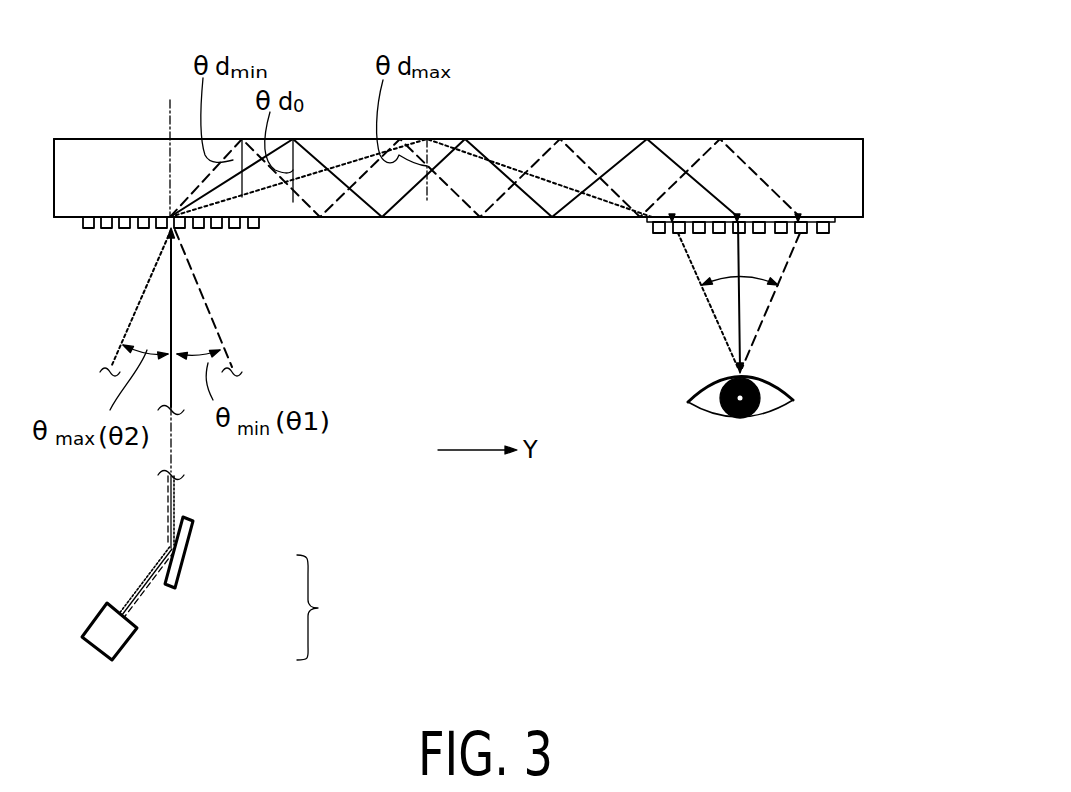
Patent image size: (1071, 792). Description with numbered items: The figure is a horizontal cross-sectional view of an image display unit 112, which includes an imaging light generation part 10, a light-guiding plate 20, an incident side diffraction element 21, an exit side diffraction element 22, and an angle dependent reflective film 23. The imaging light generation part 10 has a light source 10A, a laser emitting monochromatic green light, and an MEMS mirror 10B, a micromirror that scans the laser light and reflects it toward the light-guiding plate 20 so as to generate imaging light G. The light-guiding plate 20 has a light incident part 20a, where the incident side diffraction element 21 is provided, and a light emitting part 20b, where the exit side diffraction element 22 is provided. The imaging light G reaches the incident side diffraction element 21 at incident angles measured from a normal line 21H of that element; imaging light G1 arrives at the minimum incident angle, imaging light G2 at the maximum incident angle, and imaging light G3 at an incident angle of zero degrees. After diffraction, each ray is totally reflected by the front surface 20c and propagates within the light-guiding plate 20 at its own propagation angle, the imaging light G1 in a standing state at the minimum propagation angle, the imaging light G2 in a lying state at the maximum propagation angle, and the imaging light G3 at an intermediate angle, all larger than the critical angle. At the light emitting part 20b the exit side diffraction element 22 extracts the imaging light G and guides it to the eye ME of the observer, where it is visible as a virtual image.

The image display unit 112 is at (796, 55).
The light-guiding plate 20 is at (497, 173).
The light incident part 20a is at (232, 251).
The light emitting part 20b is at (776, 265).
The front surface 20c is at (535, 138).
The incident side diffraction element 21 is at (108, 226).
The normal line 21H is at (173, 458).
The exit side diffraction element 22 is at (655, 234).
The angle dependent reflective film 23 is at (838, 221).
The imaging light generation part 10 is at (322, 607).
The light source 10A is at (122, 635).
The MEMS mirror 10B is at (180, 553).
The imaging light G is at (748, 284).
The imaging light at minimum incident angle G1 is at (197, 286).
The imaging light at maximum incident angle G2 is at (130, 318).
The imaging light at zero incident angle G3 is at (173, 395).
The eye ME is at (780, 409).